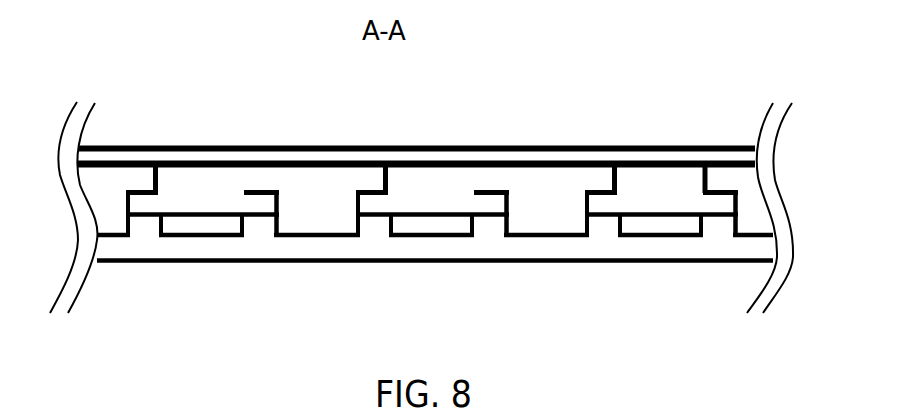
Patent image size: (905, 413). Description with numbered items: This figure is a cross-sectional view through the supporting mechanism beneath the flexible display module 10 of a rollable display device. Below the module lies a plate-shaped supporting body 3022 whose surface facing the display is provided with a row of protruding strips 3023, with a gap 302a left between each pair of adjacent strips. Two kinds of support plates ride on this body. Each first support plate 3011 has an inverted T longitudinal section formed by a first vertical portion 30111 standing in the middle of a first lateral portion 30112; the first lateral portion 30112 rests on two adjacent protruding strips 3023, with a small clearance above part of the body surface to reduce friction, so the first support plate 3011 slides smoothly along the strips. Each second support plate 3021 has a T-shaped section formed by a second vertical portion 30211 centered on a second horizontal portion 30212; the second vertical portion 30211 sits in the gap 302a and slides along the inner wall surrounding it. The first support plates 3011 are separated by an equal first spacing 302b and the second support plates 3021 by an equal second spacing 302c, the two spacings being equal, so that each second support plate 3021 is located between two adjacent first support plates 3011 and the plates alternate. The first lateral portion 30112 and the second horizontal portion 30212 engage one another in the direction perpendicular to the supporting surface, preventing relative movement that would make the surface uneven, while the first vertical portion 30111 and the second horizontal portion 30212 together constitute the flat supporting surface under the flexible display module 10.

The flexible display module 10 is at (295, 157).
The gap 302a is at (648, 223).
The first spacing 302b is at (248, 170).
The second spacing 302c is at (478, 170).
The first support plate 3011 is at (437, 188).
The first vertical portion 30111 is at (460, 177).
The first lateral portion 30112 is at (388, 198).
The second support plate 3021 is at (318, 210).
The second vertical portion 30211 is at (280, 218).
The second horizontal portion 30212 is at (332, 178).
The supporting body 3022 is at (200, 245).
The protruding strip 3023 is at (137, 225).